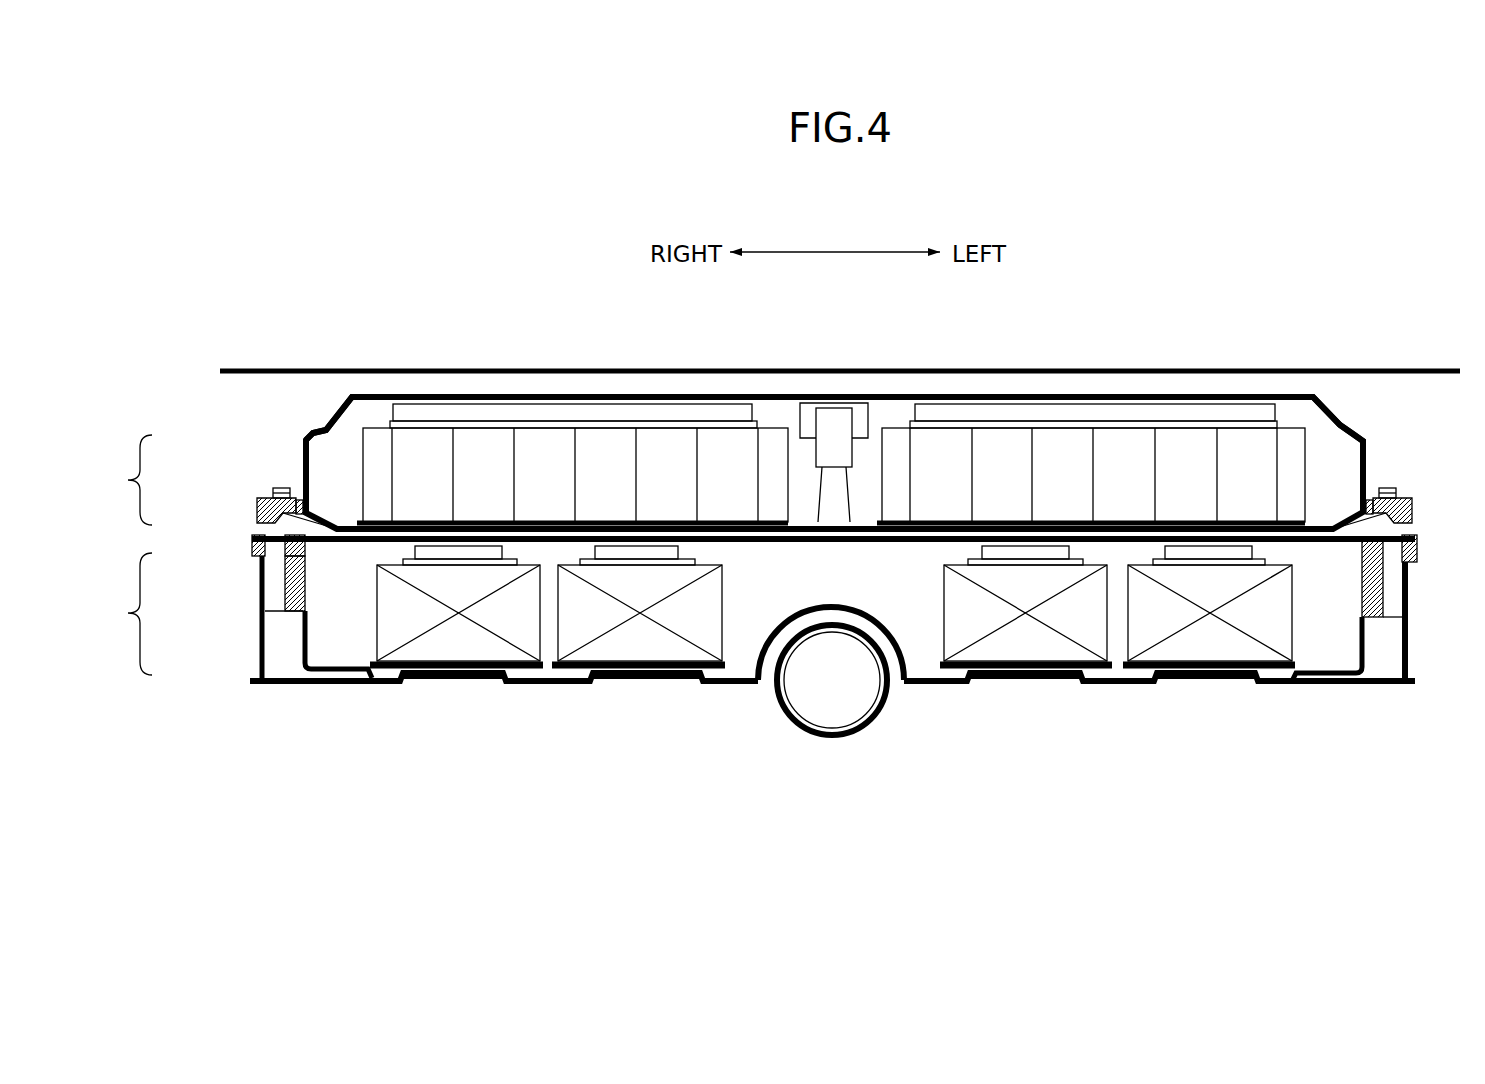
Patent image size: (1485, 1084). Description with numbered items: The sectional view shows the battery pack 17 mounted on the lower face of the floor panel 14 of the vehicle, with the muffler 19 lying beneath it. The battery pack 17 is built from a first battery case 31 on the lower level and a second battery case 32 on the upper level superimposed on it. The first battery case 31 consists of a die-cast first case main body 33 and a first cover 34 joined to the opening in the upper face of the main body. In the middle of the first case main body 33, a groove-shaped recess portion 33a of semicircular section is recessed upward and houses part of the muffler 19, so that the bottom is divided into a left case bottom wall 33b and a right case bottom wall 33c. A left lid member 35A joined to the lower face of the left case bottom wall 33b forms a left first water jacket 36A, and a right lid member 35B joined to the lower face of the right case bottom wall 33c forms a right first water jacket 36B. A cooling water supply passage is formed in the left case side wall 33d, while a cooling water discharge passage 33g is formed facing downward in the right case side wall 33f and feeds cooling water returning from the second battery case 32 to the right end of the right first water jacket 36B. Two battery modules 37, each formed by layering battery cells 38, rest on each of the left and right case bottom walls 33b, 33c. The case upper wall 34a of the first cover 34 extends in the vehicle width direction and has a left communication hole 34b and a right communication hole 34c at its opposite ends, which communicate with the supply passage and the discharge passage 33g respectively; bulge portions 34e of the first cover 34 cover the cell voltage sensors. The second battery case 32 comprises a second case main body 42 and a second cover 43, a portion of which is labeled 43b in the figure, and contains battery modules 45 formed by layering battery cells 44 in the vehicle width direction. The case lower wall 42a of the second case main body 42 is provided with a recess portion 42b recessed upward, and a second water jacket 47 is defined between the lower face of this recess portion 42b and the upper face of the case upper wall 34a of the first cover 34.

The floor panel 14 is at (790, 370).
The battery pack 17 is at (292, 417).
The muffler 19 is at (863, 720).
The first battery case 31 is at (125, 614).
The second battery case 32 is at (125, 480).
The first case main body 33 is at (255, 632).
The recess portion 33a is at (863, 613).
The left case bottom wall 33b is at (1113, 660).
The right case bottom wall 33c is at (573, 660).
The left case side wall 33d is at (1408, 590).
The right case side wall 33f is at (258, 640).
The cooling water discharge passage 33g is at (275, 578).
The first cover 34 is at (247, 545).
The case upper wall 34a is at (737, 543).
The left communication hole 34b is at (1390, 545).
The right communication hole 34c is at (288, 548).
The bulge portion 34e is at (1388, 583).
The left lid member 35A is at (1113, 678).
The right lid member 35B is at (548, 683).
The left first water jacket 36A is at (1043, 686).
The right first water jacket 36B is at (467, 675).
The battery module 37 is at (372, 636).
The battery cells 38 is at (492, 624).
The second case main body 42 is at (255, 508).
The case lower wall 42a is at (967, 522).
The recess portion 42b is at (988, 532).
The second cover 43 is at (300, 445).
The cover top wall 43b is at (705, 396).
The battery cells 44 is at (590, 438).
The battery modules 45 is at (374, 416).
The second water jacket 47 is at (900, 541).